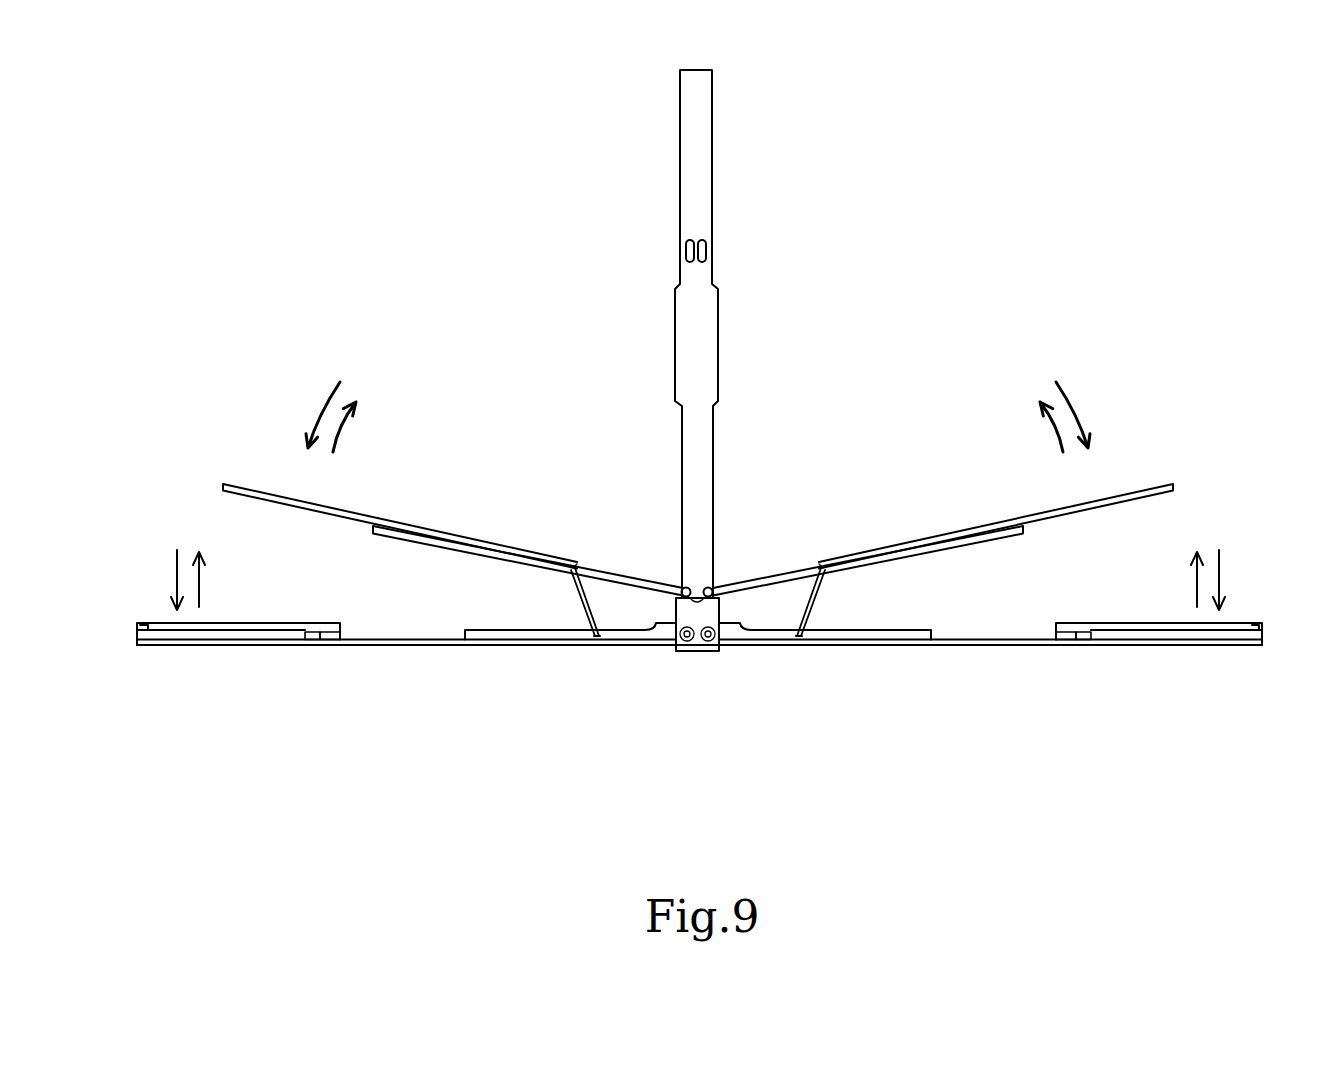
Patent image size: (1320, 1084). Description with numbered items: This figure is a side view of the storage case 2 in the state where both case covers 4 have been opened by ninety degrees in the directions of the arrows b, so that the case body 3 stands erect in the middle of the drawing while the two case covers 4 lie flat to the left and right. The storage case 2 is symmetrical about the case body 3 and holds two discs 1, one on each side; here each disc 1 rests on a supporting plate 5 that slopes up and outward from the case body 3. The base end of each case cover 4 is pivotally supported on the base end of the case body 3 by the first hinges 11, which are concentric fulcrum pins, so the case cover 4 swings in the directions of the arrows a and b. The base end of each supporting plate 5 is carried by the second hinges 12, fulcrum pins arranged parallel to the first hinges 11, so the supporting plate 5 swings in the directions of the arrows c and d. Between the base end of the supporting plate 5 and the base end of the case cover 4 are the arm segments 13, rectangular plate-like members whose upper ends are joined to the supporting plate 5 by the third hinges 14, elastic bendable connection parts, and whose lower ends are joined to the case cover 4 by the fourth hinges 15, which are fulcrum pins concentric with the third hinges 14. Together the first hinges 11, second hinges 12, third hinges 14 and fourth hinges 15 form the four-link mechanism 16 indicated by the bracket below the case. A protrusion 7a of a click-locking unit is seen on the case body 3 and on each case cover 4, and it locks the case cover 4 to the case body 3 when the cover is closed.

The disc 1 is at (272, 493).
The storage case 2 is at (861, 191).
The case body 3 is at (690, 158).
The case cover 4 is at (272, 640).
The supporting plate 5 is at (502, 558).
The protrusion 7a is at (700, 255).
The first hinges (fulcrum pins) 11 is at (709, 652).
The second hinges (fulcrum pins) 12 is at (710, 588).
The arm segments 13 is at (577, 600).
The third hinges 14 is at (577, 565).
The fourth hinges (fulcrum pins) 15 is at (597, 645).
The four-link mechanism 16 is at (497, 760).
The arrow a is at (191, 578).
The arrow b is at (174, 583).
The arrow c is at (340, 438).
The arrow d is at (311, 446).